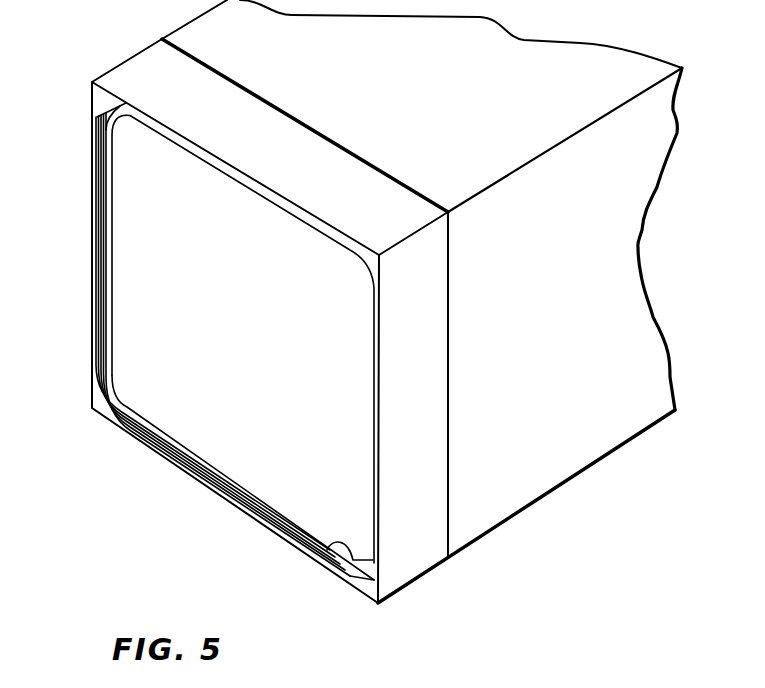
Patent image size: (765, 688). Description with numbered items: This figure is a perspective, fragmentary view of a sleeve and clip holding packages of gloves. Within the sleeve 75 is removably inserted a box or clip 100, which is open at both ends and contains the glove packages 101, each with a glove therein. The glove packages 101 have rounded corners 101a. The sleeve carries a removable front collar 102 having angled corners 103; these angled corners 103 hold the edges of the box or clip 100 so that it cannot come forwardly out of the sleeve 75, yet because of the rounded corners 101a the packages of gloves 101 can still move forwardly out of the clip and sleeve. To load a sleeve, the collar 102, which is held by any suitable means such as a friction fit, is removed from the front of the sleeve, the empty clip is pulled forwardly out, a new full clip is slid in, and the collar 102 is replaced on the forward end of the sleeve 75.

The sleeve 75 is at (476, 518).
The box or clip 100 is at (340, 577).
The glove packages 101 is at (298, 503).
The rounded corners 101a is at (318, 560).
The front collar 102 is at (428, 568).
The angled corners 103 is at (366, 586).